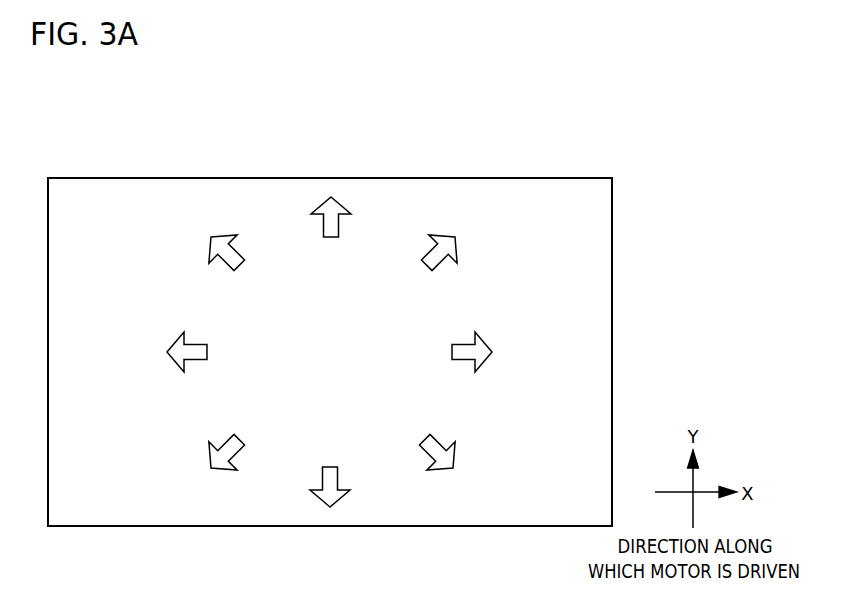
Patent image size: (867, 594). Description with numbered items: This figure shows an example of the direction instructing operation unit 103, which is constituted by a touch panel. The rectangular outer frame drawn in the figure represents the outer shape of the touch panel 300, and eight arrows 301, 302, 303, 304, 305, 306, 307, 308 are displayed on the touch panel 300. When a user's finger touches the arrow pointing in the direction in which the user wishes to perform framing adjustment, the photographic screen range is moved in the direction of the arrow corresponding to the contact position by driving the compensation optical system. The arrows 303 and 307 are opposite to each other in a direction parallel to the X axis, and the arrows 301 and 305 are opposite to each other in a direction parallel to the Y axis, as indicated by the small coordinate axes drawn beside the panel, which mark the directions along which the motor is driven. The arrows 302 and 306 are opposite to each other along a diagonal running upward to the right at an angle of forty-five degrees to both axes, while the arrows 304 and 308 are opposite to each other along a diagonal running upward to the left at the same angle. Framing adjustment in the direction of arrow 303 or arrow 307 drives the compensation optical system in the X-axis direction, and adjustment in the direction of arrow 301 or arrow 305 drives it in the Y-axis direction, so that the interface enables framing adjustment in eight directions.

The direction instructing operation unit 103 is at (114, 163).
The touch panel 300 is at (210, 178).
The arrow 301 is at (334, 237).
The arrow 302 is at (438, 236).
The arrow 303 is at (465, 344).
The arrow 304 is at (438, 469).
The arrow 305 is at (330, 467).
The arrow 306 is at (223, 469).
The arrow 307 is at (203, 344).
The arrow 308 is at (225, 236).